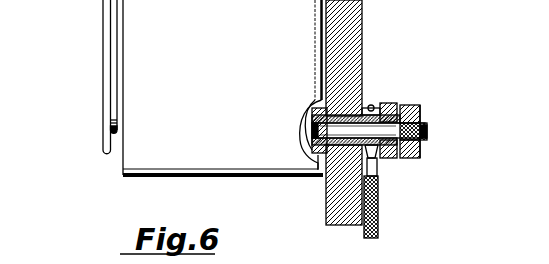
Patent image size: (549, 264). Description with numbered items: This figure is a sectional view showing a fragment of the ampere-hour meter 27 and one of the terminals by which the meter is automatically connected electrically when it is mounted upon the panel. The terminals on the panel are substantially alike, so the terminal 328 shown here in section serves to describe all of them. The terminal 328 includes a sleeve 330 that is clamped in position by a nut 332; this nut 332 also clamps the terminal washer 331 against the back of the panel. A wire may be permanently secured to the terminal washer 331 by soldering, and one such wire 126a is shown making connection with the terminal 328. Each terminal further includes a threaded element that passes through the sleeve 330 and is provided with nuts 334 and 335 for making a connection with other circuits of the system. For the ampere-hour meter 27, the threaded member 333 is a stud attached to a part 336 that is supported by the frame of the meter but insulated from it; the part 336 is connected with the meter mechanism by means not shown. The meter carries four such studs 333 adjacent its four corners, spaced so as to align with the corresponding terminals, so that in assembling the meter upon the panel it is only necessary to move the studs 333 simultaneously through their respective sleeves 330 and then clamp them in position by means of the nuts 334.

The ampere-hour meter 27 is at (130, 152).
The terminal 328 is at (406, 77).
The sleeve 330 is at (326, 176).
The terminal washer 331 is at (385, 100).
The nut 332 is at (388, 130).
The stud 333 is at (405, 126).
The nut 334 is at (405, 158).
The nut 335 is at (410, 147).
The part 336 is at (312, 110).
The wire 126a is at (378, 200).